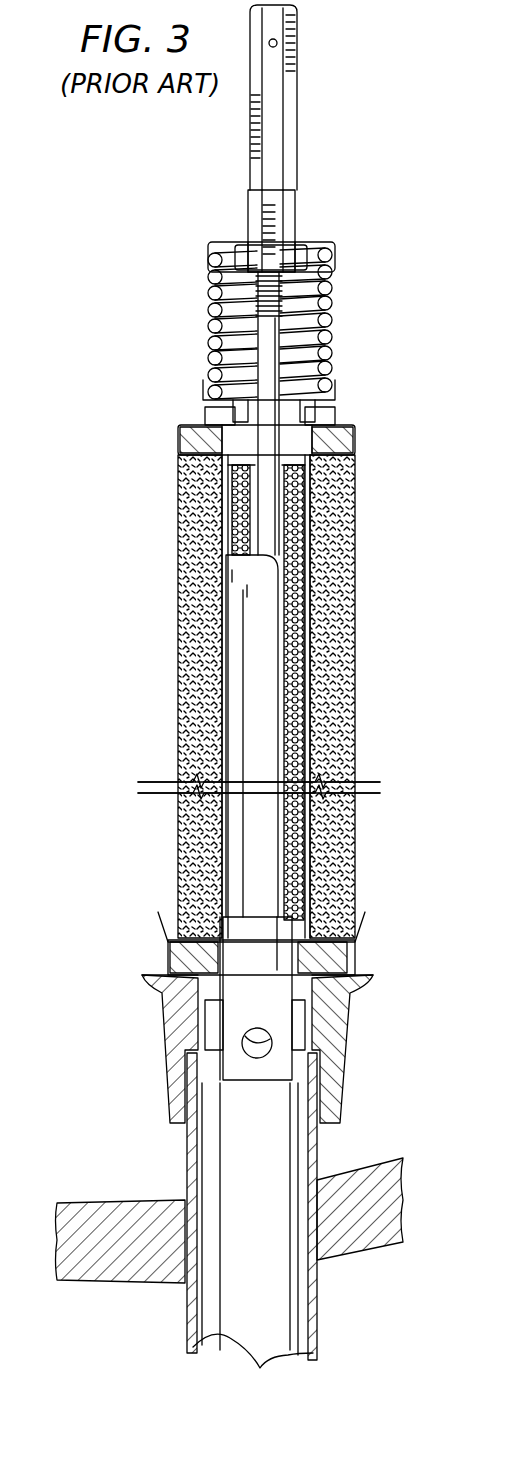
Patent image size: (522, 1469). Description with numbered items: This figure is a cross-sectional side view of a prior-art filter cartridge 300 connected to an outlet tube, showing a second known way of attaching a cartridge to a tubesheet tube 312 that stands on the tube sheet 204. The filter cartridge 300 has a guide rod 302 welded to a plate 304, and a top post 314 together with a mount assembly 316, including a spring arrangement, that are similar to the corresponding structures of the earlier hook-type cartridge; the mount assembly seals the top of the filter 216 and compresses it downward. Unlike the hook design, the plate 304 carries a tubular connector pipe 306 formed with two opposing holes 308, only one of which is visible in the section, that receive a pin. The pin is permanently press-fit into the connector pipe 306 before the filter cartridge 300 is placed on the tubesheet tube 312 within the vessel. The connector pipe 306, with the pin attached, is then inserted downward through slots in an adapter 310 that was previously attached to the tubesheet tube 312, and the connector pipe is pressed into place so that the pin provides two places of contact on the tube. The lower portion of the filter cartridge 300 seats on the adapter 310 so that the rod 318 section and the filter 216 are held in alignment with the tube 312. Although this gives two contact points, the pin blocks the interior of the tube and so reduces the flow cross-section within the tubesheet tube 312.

The filter cartridge 300 is at (360, 172).
The top post 314 is at (300, 83).
The rod lower section 318 is at (298, 219).
The mount assembly 316 is at (330, 300).
The guide rod 302 is at (265, 348).
The filter cartridge 216 is at (178, 562).
The plate 304 is at (235, 858).
The tubular connector pipe 306 is at (258, 1080).
The hole 308 is at (252, 1028).
The adapter 310 is at (162, 1060).
The tubesheet tube 312 is at (318, 1295).
The tube sheet 204 is at (113, 1275).